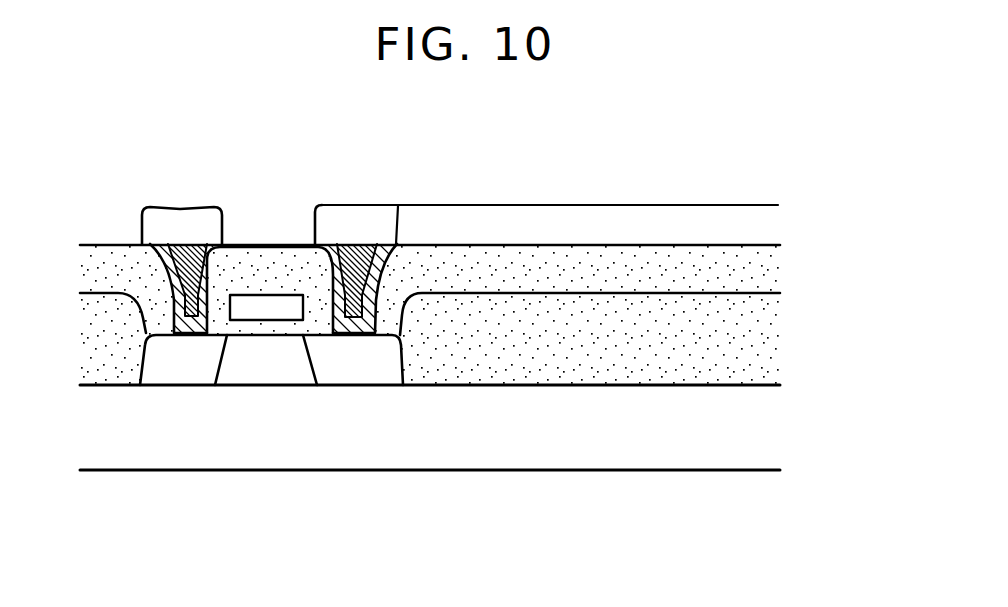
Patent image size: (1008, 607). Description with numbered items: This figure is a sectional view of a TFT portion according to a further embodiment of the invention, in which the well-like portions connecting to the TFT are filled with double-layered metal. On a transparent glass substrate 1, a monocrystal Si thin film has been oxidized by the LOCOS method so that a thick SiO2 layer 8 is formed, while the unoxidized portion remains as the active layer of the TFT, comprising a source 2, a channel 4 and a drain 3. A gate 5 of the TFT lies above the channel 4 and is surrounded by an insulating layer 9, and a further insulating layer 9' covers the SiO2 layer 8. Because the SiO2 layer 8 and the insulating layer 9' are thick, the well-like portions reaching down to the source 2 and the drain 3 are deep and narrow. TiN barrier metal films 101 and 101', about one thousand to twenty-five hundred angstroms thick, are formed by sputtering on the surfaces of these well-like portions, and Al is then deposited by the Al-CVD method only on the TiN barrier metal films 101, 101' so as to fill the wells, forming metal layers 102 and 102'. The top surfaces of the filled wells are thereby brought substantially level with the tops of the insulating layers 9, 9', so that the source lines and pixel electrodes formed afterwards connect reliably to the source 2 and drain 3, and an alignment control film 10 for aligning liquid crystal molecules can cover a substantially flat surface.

The transparent substrate 1 is at (625, 440).
The source 2 is at (180, 373).
The drain 3 is at (358, 373).
The channel 4 is at (262, 373).
The gate 5 is at (253, 302).
The SiO2 layer 8 is at (760, 333).
The insulating layer 9 is at (270, 235).
The insulating layer 9' is at (455, 261).
The alignment control film 10 is at (762, 221).
The TiN barrier metal film 101 is at (156, 188).
The TiN barrier metal film 101' is at (389, 188).
The metal layer 102 is at (288, 225).
The metal layer 102' is at (288, 224).